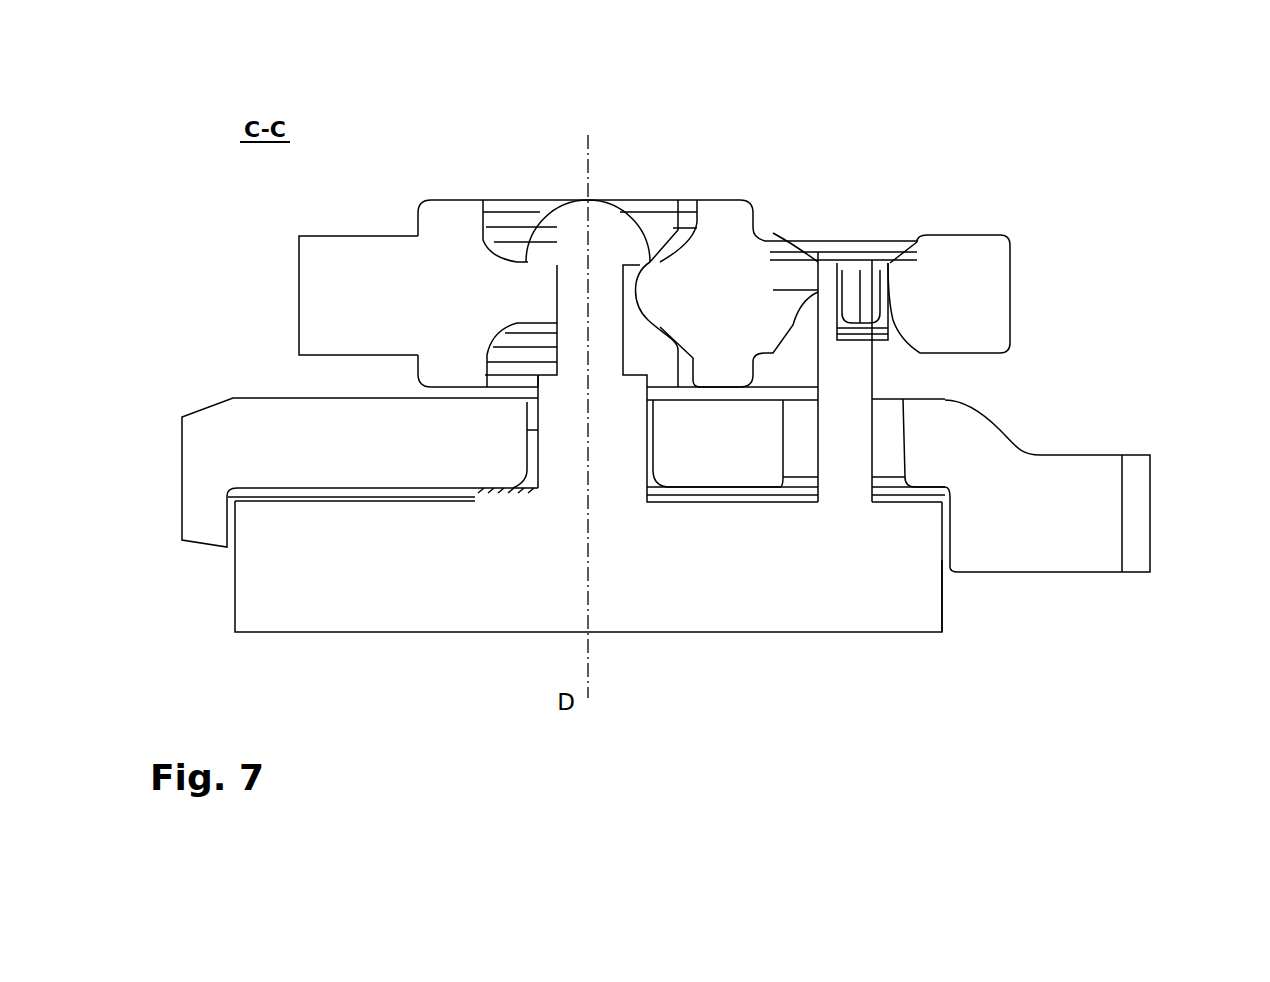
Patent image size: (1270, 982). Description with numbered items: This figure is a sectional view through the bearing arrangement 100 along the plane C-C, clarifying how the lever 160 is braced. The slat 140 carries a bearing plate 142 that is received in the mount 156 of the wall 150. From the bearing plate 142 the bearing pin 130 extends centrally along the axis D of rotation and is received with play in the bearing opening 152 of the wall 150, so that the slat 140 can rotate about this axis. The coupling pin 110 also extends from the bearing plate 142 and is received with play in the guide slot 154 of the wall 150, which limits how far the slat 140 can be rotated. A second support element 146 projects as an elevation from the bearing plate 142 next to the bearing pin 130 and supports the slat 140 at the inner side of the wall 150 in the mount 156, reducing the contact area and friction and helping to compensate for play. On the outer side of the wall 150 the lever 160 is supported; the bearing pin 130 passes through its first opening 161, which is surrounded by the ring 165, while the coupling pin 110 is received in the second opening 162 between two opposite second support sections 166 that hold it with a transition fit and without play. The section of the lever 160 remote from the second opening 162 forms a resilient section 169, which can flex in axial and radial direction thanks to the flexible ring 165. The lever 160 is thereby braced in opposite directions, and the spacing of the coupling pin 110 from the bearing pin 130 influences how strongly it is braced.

The bearing arrangement 100 is at (1145, 152).
The coupling pin 110 is at (862, 383).
The bearing pin 130 is at (565, 213).
The slat 140 is at (889, 649).
The bearing plate 142 is at (913, 533).
The second support element 146 is at (492, 495).
The wall 150 is at (1097, 531).
The bearing opening 152 is at (528, 462).
The guide slot 154 is at (891, 447).
The mount 156 is at (230, 548).
The lever 160 is at (288, 251).
The first opening 161 is at (641, 279).
The second opening 162 is at (895, 308).
The ring 165 is at (681, 197).
The second support sections 166 is at (866, 292).
The resilient section 169 is at (333, 314).